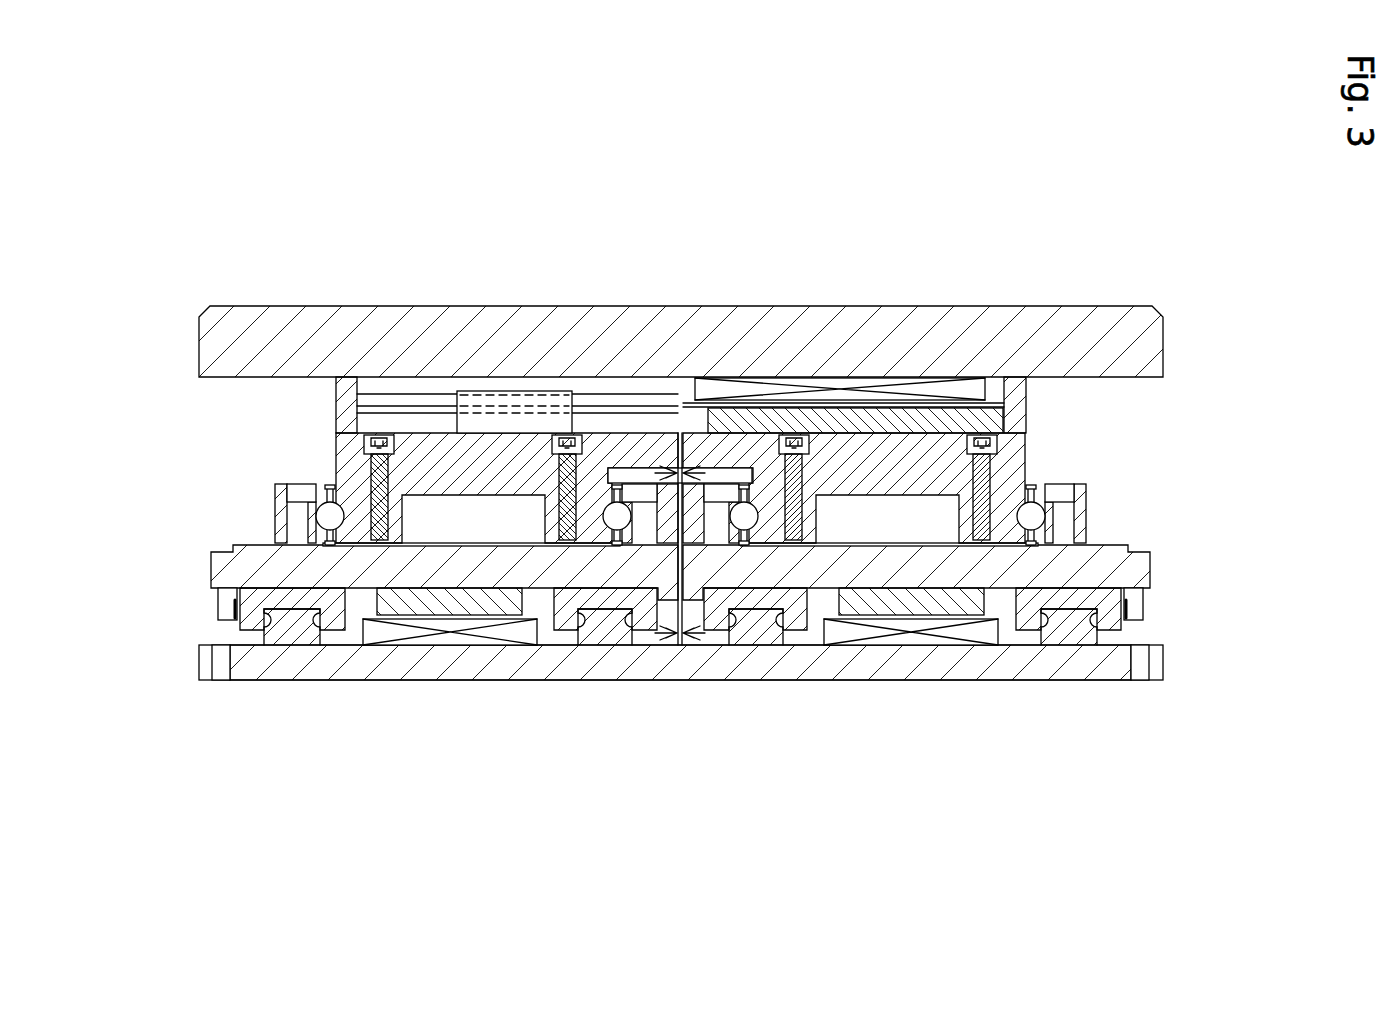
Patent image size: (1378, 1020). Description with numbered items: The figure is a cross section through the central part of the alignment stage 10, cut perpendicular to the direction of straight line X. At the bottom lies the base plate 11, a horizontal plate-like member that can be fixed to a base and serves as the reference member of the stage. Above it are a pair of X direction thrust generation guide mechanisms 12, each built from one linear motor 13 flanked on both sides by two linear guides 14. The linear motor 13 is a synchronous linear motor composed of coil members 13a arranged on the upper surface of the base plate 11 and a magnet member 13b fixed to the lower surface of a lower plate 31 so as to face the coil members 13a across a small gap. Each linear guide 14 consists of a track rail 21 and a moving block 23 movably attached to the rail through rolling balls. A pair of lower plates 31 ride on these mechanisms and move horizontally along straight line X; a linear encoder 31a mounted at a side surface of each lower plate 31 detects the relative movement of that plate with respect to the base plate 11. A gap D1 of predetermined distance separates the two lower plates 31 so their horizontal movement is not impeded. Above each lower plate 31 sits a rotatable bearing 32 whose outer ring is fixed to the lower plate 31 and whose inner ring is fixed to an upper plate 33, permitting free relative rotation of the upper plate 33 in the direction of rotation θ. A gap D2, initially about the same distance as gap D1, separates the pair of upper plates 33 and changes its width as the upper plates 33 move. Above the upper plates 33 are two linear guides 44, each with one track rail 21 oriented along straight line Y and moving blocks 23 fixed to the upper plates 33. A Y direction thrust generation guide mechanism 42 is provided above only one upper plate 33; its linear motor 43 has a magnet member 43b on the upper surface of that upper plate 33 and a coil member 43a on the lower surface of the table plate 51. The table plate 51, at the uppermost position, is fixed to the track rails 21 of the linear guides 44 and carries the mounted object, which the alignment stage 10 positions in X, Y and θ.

The alignment stage 10 is at (1050, 153).
The base plate 11 is at (622, 662).
The X direction thrust generation guide mechanism 12 is at (203, 640).
The linear motor 13 is at (673, 697).
The coil member 13a is at (455, 640).
The magnet member 13b is at (420, 605).
The linear guide 14 is at (252, 613).
The track rail 21 is at (408, 387).
The moving block 23 is at (537, 418).
The lower plate 31 is at (212, 562).
The linear encoder 31a is at (218, 597).
The rotatable bearing 32 is at (274, 501).
The upper plate 33 is at (335, 453).
The Y direction thrust generation guide mechanism 42 is at (1058, 416).
The linear motor 43 is at (843, 311).
The coil member 43a is at (823, 385).
The magnet member 43b is at (888, 420).
The linear guide 44 is at (509, 372).
The table plate 51 is at (1085, 317).
The gap D1 is at (682, 647).
The gap D2 is at (712, 480).